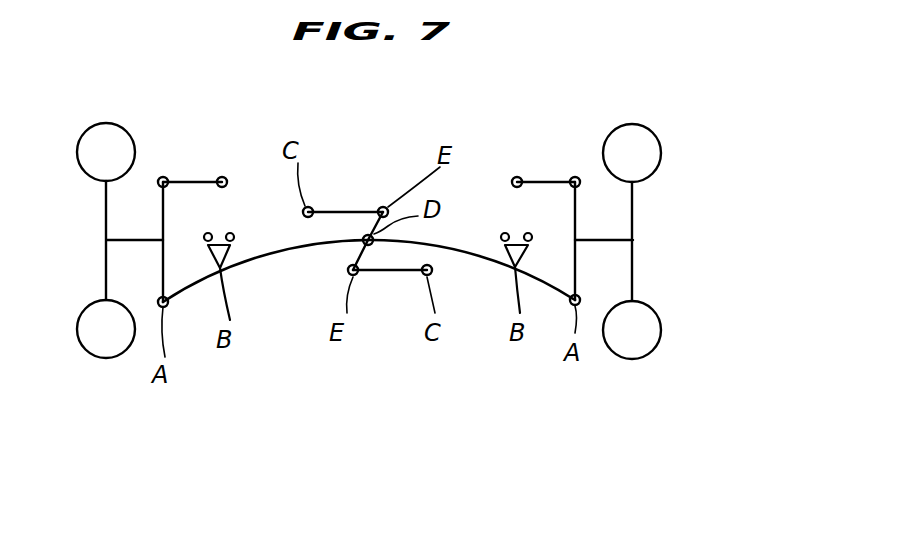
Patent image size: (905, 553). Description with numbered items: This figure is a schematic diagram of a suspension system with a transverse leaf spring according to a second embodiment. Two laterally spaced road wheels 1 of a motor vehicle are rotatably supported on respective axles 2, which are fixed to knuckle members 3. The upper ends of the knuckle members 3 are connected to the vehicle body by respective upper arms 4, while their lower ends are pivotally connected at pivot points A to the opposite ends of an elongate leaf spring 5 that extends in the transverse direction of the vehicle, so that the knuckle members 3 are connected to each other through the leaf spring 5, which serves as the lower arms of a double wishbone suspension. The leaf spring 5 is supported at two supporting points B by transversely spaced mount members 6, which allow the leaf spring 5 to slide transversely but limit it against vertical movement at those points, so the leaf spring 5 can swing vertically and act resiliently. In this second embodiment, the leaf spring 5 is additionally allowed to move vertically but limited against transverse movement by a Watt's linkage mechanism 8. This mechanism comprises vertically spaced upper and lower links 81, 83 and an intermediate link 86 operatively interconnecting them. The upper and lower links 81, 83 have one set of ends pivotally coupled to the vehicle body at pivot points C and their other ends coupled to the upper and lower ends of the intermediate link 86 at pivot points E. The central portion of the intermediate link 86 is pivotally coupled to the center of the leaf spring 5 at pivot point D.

The road wheel 1 is at (79, 341).
The axle 2 is at (133, 240).
The knuckle member 3 is at (163, 213).
The upper arm 4 is at (200, 182).
The leaf spring 5 is at (318, 246).
The mount member 6 is at (208, 258).
The Watt's linkage mechanism 8 is at (339, 225).
The upper link 81 is at (340, 207).
The lower link 83 is at (395, 277).
The intermediate link 86 is at (366, 226).